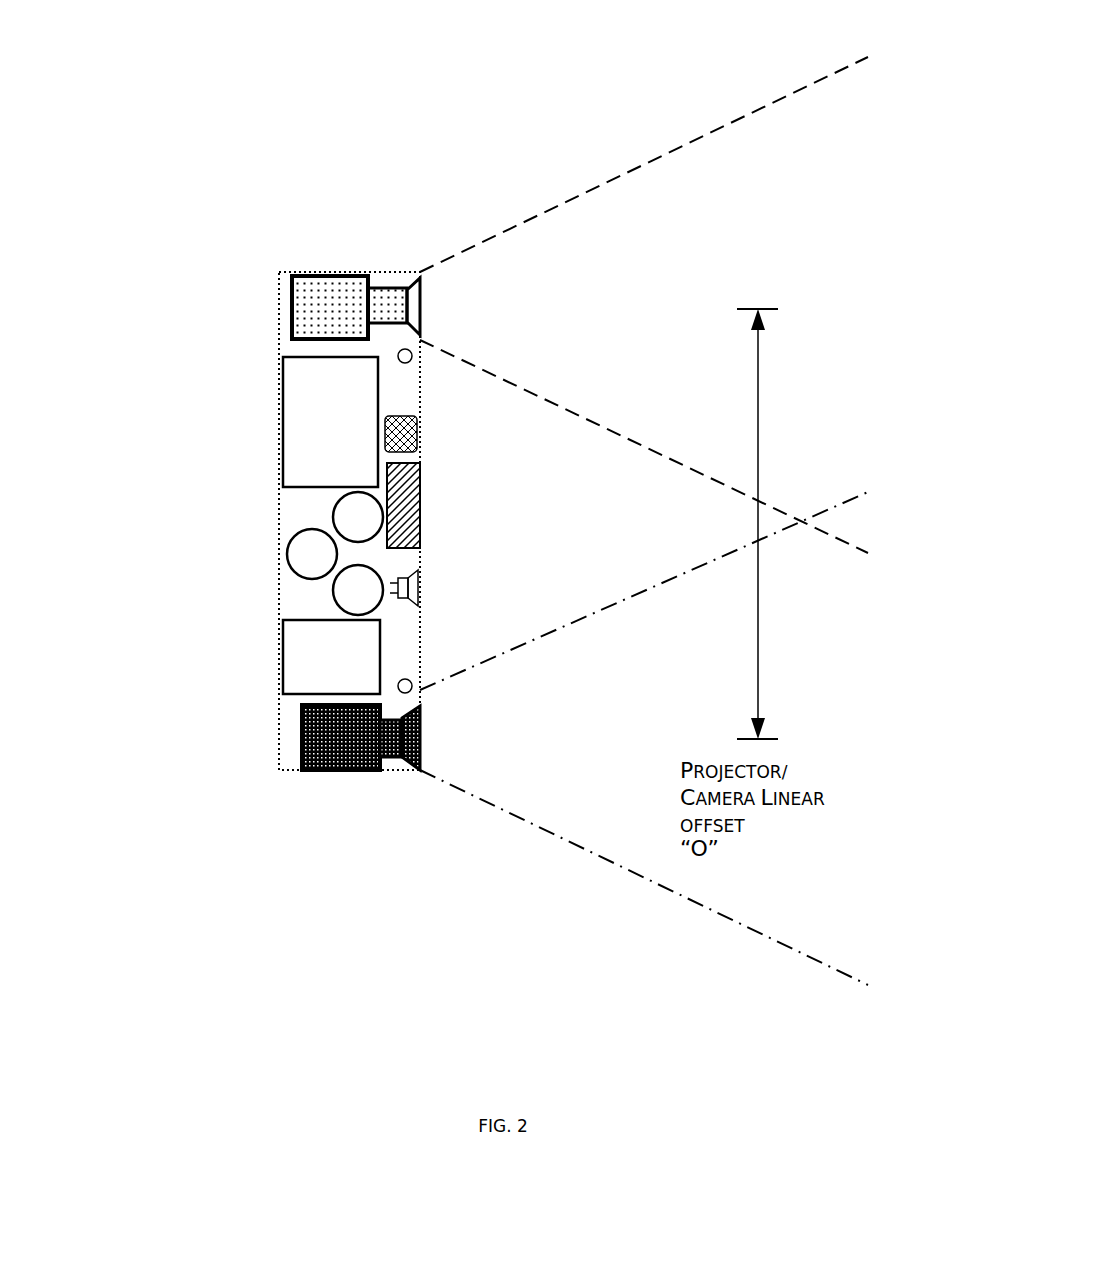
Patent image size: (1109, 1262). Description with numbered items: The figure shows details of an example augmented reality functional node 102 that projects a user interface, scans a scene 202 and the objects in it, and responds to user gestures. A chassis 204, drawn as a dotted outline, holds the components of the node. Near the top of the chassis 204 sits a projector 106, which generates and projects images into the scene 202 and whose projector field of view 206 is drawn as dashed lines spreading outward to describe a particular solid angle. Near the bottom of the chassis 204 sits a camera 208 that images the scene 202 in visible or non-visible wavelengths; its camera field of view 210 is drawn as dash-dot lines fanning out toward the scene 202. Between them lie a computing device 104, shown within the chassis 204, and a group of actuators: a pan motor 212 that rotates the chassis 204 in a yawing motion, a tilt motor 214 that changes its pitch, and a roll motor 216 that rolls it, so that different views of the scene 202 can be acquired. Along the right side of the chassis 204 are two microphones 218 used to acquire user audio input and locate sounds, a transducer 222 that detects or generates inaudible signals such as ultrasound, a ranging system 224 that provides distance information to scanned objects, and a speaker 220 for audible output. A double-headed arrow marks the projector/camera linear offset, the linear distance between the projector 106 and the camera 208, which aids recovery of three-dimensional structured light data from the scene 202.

The augmented reality functional node 102 is at (313, 272).
The computing device 104 is at (333, 413).
The projector 106 is at (328, 312).
The scene 202 is at (831, 524).
The chassis 204 is at (350, 272).
The projector field of view 206 is at (650, 160).
The camera 208 is at (320, 745).
The camera field of view 210 is at (596, 860).
The pan motor 212 is at (333, 517).
The tilt motor 214 is at (290, 563).
The roll motor 216 is at (348, 605).
The microphone 218 is at (430, 346).
The speaker 220 is at (420, 588).
The transducer 222 is at (415, 418).
The ranging system 224 is at (420, 500).